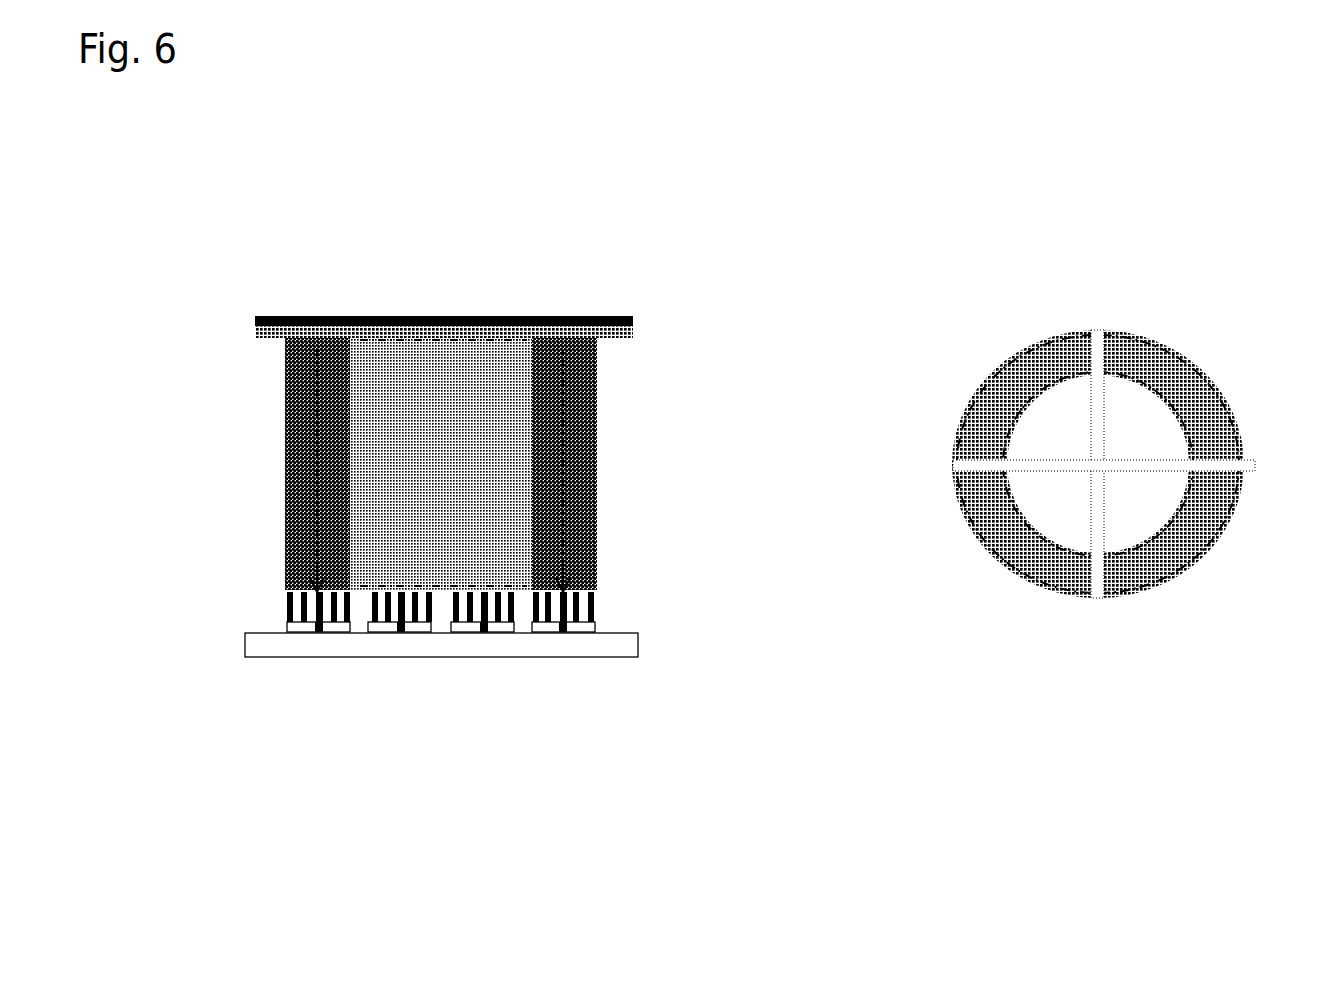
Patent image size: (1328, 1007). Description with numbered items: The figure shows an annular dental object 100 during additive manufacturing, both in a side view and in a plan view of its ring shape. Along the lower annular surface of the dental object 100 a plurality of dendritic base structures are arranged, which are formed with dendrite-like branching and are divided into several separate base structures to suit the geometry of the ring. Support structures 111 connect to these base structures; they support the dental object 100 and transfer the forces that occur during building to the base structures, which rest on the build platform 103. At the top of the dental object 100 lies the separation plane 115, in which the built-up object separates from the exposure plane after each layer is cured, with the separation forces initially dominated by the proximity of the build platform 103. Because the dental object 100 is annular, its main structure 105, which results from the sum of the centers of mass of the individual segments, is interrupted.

The dental object 100 is at (572, 418).
The build platform 103 is at (622, 647).
The main structure 105 is at (318, 632).
The support structure 111 is at (597, 598).
The separation plane 115 is at (388, 337).